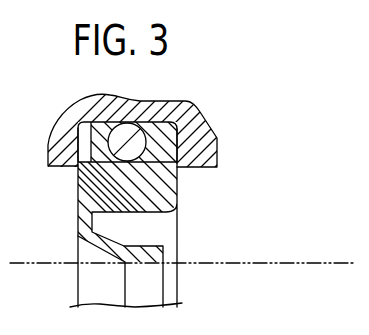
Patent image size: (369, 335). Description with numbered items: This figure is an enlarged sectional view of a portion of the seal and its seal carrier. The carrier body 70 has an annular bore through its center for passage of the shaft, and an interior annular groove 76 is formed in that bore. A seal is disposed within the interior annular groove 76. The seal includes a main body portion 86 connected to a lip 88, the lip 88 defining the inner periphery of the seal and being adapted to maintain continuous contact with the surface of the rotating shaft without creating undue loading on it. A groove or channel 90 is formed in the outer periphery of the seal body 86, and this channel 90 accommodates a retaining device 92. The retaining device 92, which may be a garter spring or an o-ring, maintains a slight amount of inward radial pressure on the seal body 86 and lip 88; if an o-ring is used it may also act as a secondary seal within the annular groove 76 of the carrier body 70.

The body portion of the carrier 70 is at (59, 165).
The interior annular groove 76 is at (147, 124).
The main body portion 86 is at (168, 210).
The lip 88 is at (143, 265).
The channel 90 is at (172, 140).
The retaining device 92 is at (124, 140).